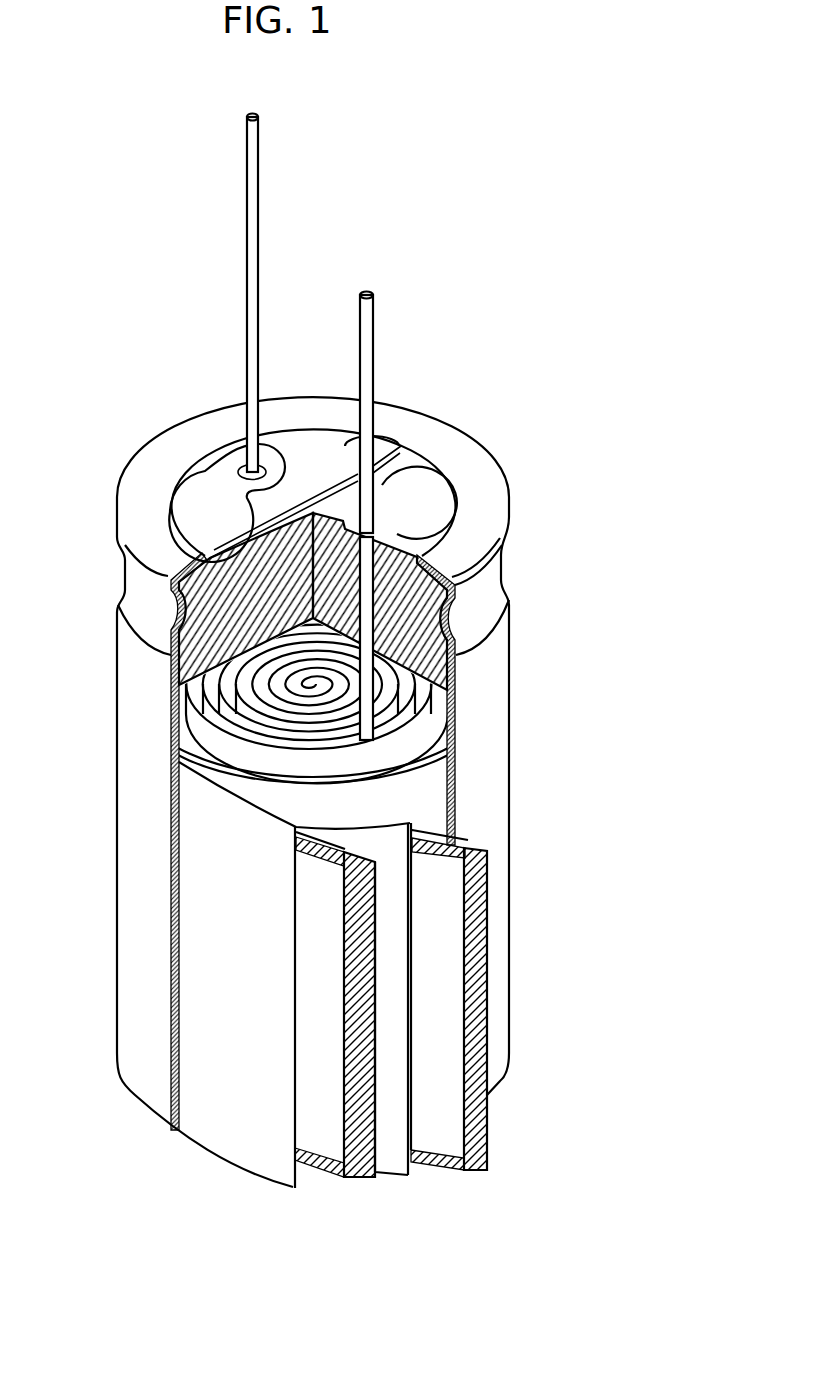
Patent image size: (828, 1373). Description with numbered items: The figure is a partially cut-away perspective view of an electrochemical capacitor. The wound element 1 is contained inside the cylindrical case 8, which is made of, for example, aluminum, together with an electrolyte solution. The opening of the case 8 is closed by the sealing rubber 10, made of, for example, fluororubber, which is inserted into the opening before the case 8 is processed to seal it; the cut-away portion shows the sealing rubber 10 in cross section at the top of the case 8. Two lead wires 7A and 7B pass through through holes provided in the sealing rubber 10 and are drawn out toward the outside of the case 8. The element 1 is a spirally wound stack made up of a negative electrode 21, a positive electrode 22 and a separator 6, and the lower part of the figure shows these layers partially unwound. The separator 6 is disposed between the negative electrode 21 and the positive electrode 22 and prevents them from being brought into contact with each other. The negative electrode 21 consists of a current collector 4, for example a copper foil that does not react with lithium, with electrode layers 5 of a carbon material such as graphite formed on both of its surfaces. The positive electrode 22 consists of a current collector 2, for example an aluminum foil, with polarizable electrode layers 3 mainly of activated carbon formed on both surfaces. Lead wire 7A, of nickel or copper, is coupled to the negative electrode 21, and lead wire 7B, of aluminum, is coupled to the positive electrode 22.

The element 1 is at (255, 722).
The current collector 2 is at (475, 881).
The polarizable electrode layer 3 is at (450, 930).
The current collector 4 is at (367, 985).
The electrode layer 5 is at (327, 1023).
The separator 6 is at (395, 1162).
The lead wire 7A is at (246, 243).
The lead wire 7B is at (375, 318).
The case 8 is at (502, 643).
The sealing rubber 10 is at (433, 655).
The negative electrode 21 is at (461, 1007).
The positive electrode 22 is at (519, 996).